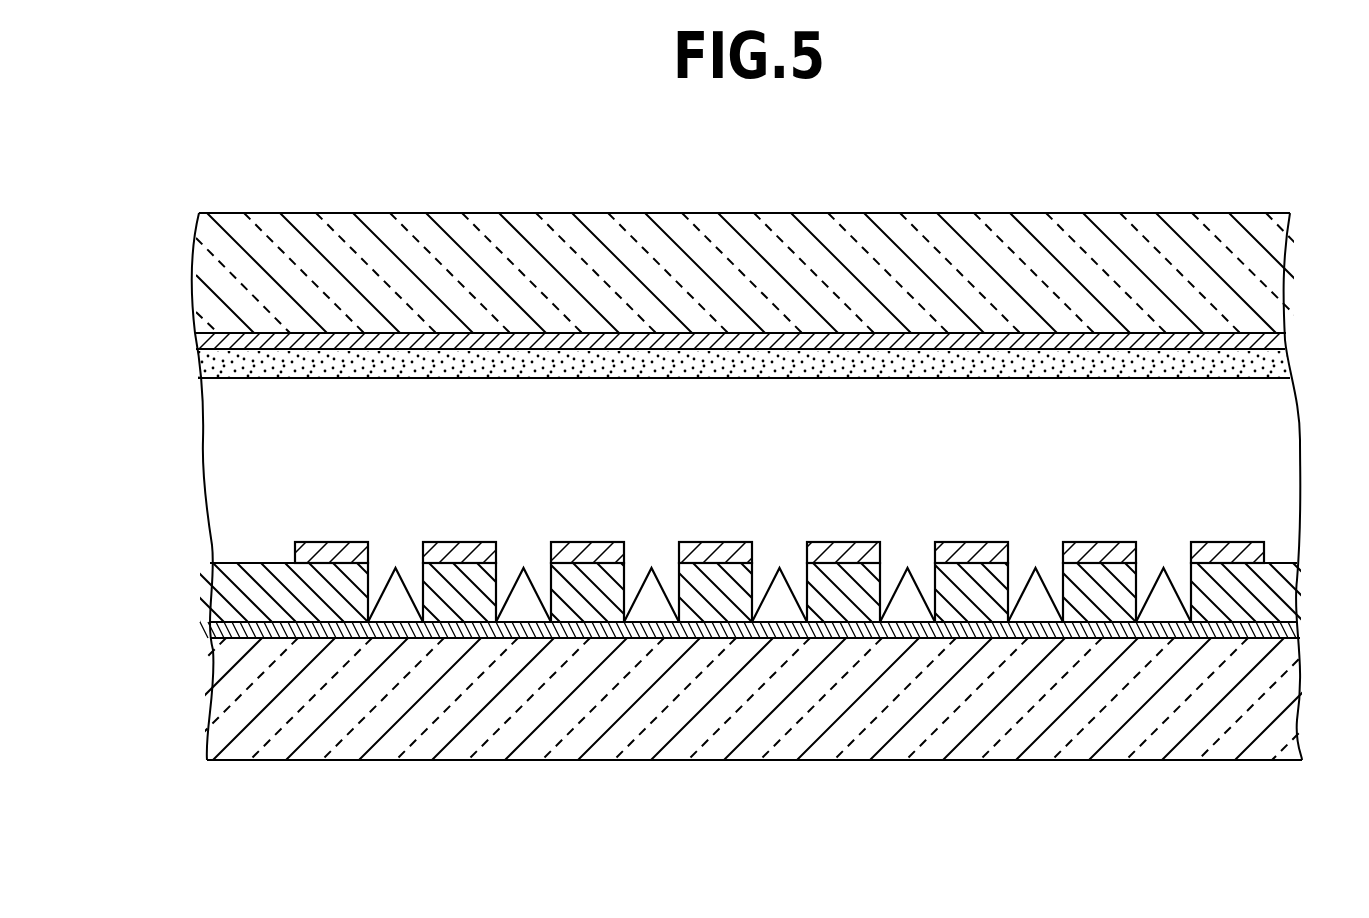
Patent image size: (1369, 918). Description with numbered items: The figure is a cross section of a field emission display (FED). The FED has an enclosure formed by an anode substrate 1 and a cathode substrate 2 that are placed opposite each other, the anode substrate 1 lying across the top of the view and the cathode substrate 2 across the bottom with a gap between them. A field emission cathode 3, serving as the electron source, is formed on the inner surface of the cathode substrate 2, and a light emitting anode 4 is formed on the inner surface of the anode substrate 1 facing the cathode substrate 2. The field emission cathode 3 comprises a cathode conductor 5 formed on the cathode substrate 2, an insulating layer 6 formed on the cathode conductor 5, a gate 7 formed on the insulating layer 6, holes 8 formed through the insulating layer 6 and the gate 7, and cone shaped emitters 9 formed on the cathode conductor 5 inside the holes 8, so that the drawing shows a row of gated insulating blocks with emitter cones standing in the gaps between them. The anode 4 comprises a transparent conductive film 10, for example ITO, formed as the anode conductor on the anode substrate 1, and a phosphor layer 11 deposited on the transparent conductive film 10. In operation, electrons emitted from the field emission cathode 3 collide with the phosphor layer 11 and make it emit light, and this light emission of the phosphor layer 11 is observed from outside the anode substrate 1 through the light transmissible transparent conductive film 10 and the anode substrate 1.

The anode substrate 1 is at (1255, 253).
The cathode substrate 2 is at (1255, 703).
The field emission cathode 3 is at (735, 671).
The light emitting anode 4 is at (668, 355).
The cathode conductor 5 is at (395, 640).
The insulating layer 6 is at (443, 593).
The gate 7 is at (469, 553).
The hole 8 is at (534, 606).
The cone shaped emitter 9 is at (503, 583).
The transparent conductive film 10 is at (200, 345).
The phosphor layer 11 is at (213, 367).